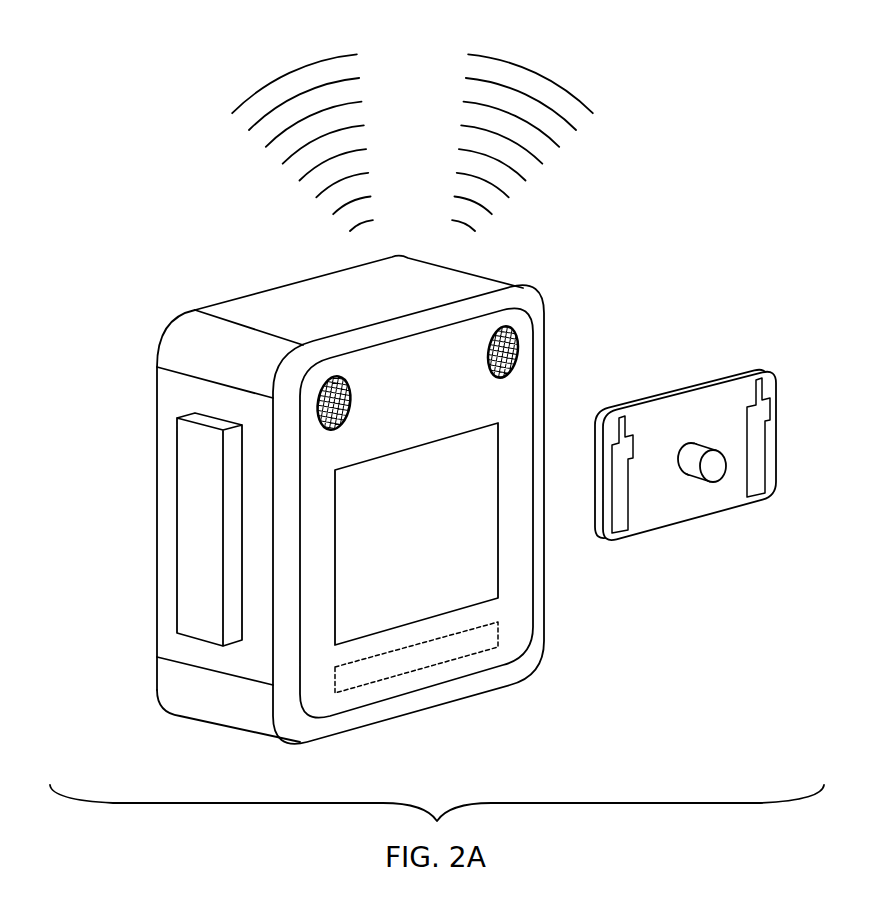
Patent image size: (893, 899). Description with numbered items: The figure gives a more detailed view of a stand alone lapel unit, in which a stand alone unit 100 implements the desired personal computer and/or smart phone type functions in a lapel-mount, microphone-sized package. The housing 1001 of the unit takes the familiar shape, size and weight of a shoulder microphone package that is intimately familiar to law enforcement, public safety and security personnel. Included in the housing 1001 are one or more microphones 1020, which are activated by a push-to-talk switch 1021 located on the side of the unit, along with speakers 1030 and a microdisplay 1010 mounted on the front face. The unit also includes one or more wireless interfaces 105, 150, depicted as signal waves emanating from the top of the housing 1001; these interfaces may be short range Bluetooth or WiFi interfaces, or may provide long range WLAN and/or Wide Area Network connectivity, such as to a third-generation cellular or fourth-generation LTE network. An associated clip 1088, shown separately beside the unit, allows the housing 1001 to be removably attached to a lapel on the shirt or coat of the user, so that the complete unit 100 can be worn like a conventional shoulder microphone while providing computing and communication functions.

The stand alone unit 100 is at (162, 338).
The wireless interface 105 is at (534, 73).
The wireless interface 150 is at (287, 73).
The housing 1001 is at (483, 693).
The microdisplay 1010 is at (438, 546).
The microphone 1020 is at (518, 350).
The push-to-talk switch 1021 is at (187, 583).
The speaker 1030 is at (500, 630).
The clip 1088 is at (713, 512).